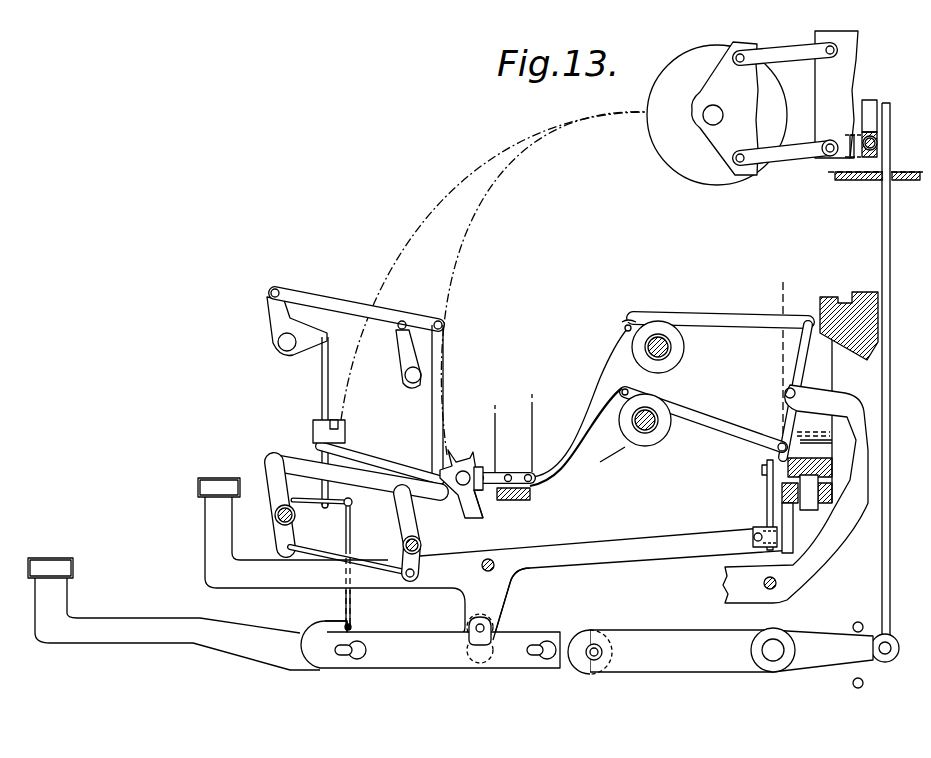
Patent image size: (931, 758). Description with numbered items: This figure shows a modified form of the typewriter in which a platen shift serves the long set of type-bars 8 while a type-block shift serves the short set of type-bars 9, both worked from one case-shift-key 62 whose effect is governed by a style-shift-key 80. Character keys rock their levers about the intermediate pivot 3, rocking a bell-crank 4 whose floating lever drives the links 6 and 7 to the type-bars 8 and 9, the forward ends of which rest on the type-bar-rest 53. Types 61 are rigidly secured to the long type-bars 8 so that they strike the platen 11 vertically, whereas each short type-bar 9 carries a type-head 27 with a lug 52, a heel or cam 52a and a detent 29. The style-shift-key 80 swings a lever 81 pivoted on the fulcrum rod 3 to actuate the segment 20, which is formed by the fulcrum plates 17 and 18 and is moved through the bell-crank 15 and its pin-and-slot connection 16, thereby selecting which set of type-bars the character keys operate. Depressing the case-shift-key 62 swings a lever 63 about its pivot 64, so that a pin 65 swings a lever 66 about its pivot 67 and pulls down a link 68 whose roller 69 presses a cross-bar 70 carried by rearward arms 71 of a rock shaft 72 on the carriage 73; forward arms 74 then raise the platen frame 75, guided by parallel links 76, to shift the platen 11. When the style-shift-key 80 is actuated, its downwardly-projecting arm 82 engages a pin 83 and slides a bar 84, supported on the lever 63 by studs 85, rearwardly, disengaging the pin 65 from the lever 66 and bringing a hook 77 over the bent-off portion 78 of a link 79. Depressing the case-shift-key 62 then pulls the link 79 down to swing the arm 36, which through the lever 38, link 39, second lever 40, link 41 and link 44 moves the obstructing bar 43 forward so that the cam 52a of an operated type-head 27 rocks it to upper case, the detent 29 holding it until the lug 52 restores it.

The intermediate pivot 3 is at (492, 562).
The bell-crank 4 is at (836, 550).
The link 6 is at (692, 406).
The link 7 is at (735, 318).
The type-bar 8 is at (617, 452).
The type-bar 9 is at (590, 373).
The platen 11 is at (668, 82).
The bell-crank 15 is at (767, 500).
The pin-and-slot connection 16 is at (763, 468).
The fulcrum plate 17 is at (833, 468).
The fulcrum plate 18 is at (819, 310).
The segment 20 is at (847, 361).
The type-head 27 is at (478, 466).
The detent 29 is at (505, 472).
The arm 36 is at (306, 510).
The lever 38 is at (266, 496).
The link 39 is at (373, 492).
The second lever 40 is at (421, 530).
The link 41 is at (305, 555).
The obstructing bar 43 is at (444, 362).
The link 44 is at (343, 308).
The lug 52 is at (455, 500).
The heel or cam 52a is at (481, 510).
The type-bar-rest 53 is at (527, 500).
The types 61 is at (307, 433).
The case-shift-key 62 is at (64, 558).
The lever 63 is at (161, 644).
The pivot 64 is at (462, 653).
The pin 65 is at (600, 651).
The lever 66 is at (695, 646).
The pivot 67 is at (773, 662).
The link 68 is at (882, 240).
The roller 69 is at (875, 104).
The cross-bar 70 is at (878, 146).
The arm 71 is at (850, 162).
The rock shaft 72 is at (830, 140).
The typewriter carriage 73 is at (854, 55).
The forwardly-extending arm 74 is at (805, 148).
The platen frame 75 is at (702, 98).
The parallel link 76 is at (800, 50).
The hook 77 is at (333, 620).
The bent-off portion 78 is at (351, 626).
The link 79 is at (350, 546).
The style-shift-key 80 is at (198, 490).
The style-selecting-lever 81 is at (596, 549).
The downwardly-projecting arm 82 is at (504, 594).
The pin 83 is at (480, 616).
The slide-bar 84 is at (406, 663).
The stud 85 is at (367, 650).